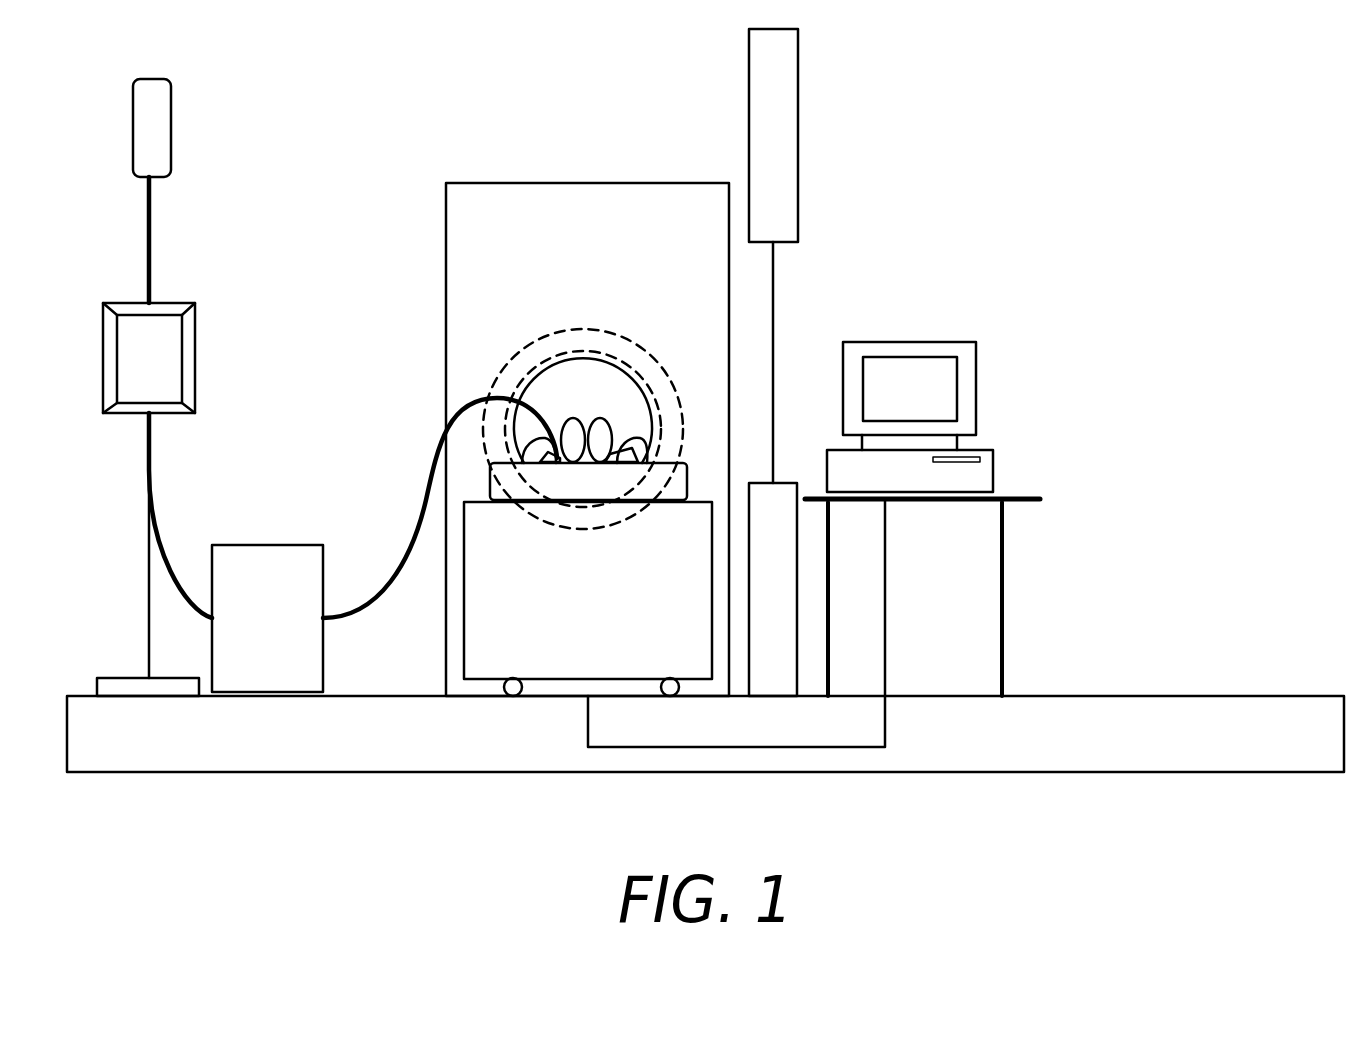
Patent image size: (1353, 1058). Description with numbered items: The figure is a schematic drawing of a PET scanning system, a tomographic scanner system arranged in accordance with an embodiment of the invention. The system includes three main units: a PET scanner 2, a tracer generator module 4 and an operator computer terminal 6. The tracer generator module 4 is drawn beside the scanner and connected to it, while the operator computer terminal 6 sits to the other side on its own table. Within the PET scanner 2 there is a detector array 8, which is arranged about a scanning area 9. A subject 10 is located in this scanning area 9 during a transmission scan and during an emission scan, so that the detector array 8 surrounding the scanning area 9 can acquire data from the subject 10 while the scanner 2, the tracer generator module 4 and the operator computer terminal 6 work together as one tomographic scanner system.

The PET scanner 2 is at (552, 183).
The tracer generator module 4 is at (280, 619).
The operator computer terminal 6 is at (935, 342).
The detector array 8 is at (560, 328).
The scanning area 9 is at (585, 377).
The subject 10 is at (602, 423).